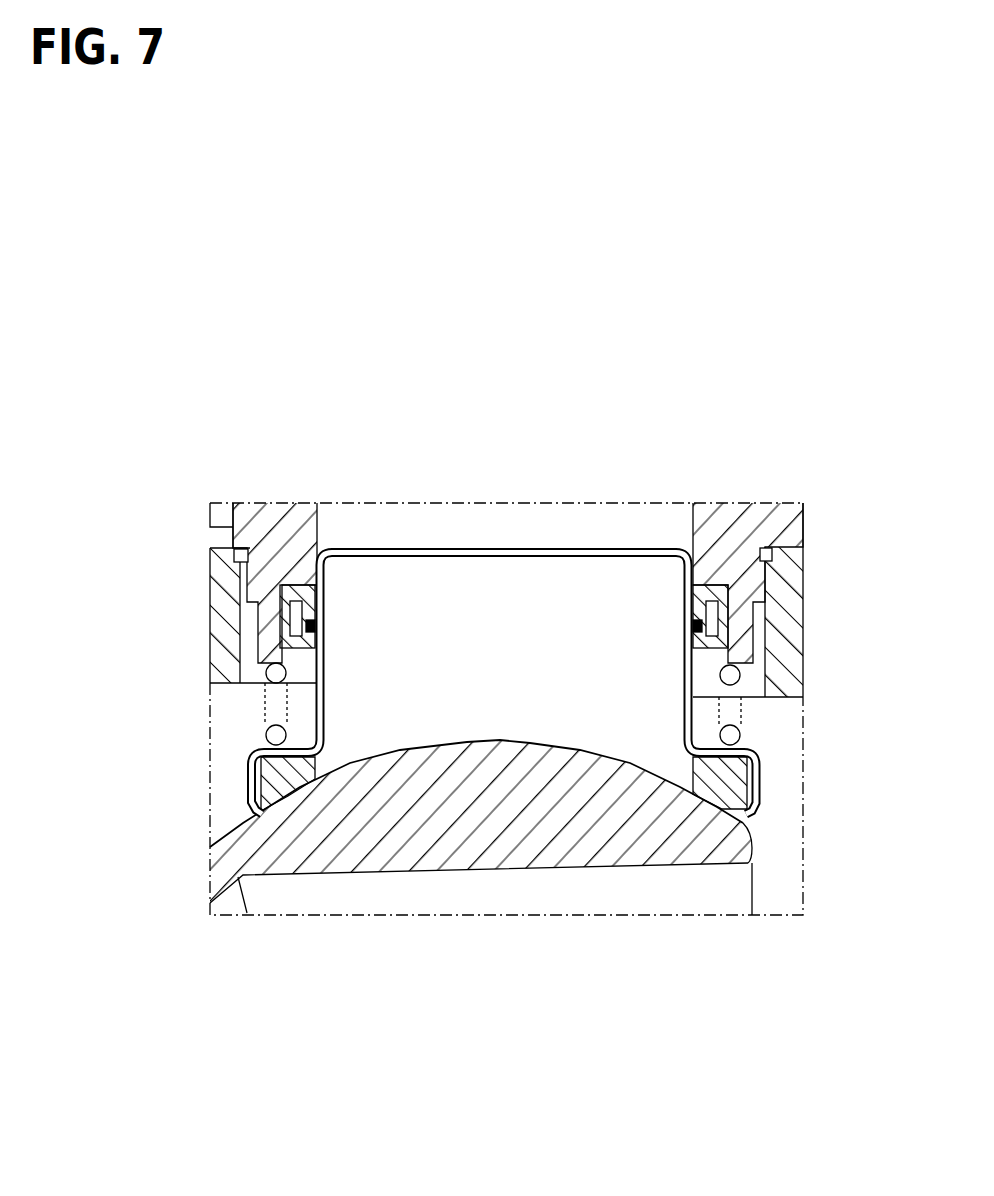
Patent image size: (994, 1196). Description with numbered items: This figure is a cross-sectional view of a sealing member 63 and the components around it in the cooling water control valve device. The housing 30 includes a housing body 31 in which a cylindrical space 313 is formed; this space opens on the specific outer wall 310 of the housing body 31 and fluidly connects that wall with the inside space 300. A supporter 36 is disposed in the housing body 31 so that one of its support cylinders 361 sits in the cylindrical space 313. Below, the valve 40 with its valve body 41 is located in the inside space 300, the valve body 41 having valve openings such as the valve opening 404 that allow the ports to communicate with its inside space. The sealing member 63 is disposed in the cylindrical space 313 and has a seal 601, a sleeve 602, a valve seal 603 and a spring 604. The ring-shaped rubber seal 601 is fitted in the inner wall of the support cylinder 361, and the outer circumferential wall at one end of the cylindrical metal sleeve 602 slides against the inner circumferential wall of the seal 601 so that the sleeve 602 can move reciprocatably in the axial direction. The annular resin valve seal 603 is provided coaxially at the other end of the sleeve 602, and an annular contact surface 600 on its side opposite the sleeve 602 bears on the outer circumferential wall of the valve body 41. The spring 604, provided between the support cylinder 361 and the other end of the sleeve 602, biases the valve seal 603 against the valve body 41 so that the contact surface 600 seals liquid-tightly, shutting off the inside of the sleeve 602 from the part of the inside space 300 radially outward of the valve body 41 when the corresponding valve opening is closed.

The housing 30 is at (805, 562).
The housing body 31 is at (800, 590).
The supporter 36 is at (805, 515).
The valve 40 is at (497, 752).
The valve body 41 is at (550, 770).
The sealing member 63 is at (452, 546).
The inside space 300 is at (775, 773).
The specific outer wall 310 is at (224, 503).
The cylindrical space 313 is at (753, 674).
The support cylinder 361 is at (740, 628).
The valve opening 404 is at (752, 848).
The contact surface 600 is at (289, 805).
The seal 601 is at (296, 628).
The sleeve 602 is at (298, 675).
The valve seal 603 is at (250, 798).
The spring 604 is at (265, 713).